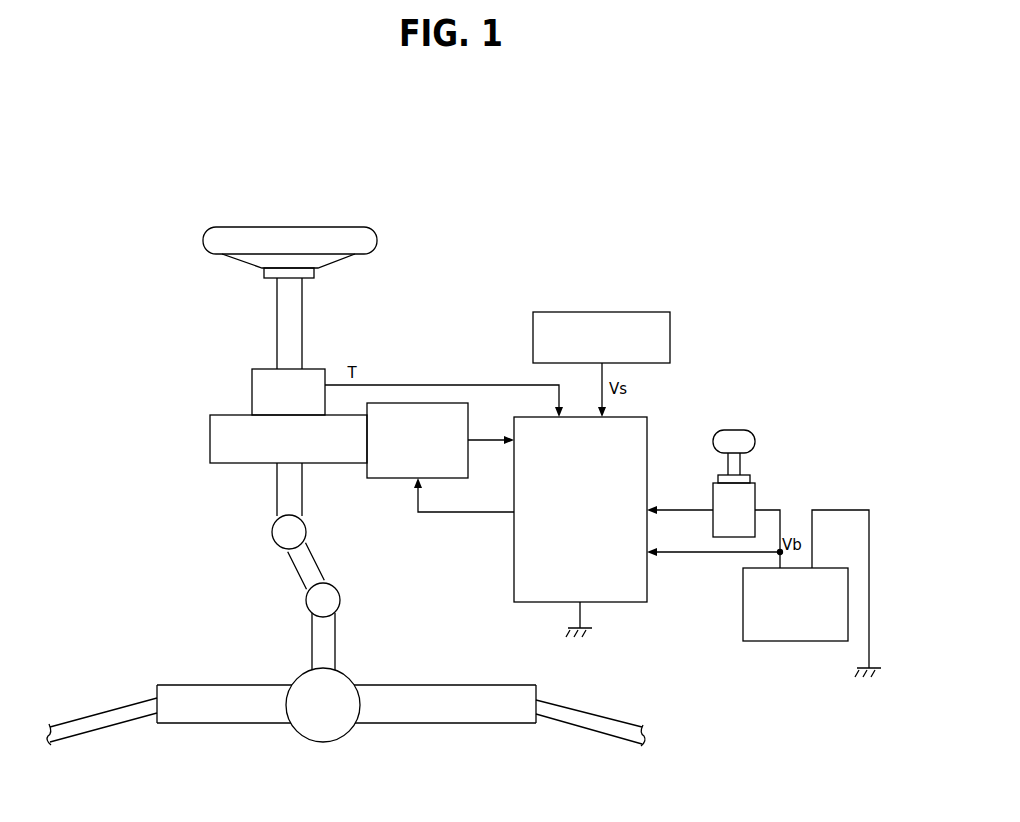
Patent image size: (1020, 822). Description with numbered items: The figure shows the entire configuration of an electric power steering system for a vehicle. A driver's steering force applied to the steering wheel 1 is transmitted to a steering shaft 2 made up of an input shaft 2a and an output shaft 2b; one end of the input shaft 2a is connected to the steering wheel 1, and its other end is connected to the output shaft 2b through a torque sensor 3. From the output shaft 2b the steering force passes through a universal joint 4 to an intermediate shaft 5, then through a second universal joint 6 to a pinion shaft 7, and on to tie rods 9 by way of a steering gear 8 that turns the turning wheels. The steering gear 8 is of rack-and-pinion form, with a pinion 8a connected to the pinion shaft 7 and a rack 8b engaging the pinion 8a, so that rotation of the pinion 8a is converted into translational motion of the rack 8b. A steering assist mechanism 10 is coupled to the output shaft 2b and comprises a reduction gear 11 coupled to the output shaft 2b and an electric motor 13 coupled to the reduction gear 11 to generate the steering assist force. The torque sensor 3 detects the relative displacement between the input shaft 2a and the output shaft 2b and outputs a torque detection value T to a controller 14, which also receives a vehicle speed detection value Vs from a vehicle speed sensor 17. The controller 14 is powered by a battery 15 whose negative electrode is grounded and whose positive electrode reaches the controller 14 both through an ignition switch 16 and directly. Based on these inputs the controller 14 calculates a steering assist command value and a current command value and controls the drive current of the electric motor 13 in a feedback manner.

The steering wheel 1 is at (300, 228).
The steering shaft 2 is at (244, 397).
The input shaft 2a is at (283, 350).
The output shaft 2b is at (278, 498).
The torque sensor 3 is at (252, 388).
The universal joint 4 is at (272, 531).
The intermediate shaft 5 is at (300, 570).
The universal joint 6 is at (306, 600).
The pinion shaft 7 is at (318, 634).
The steering gear 8 is at (346, 677).
The pinion 8a is at (302, 682).
The rack 8b is at (450, 688).
The tie rods 9 is at (108, 705).
The steering assist mechanism 10 is at (249, 416).
The reduction gear 11 is at (210, 438).
The electric motor 13 is at (468, 418).
The controller 14 is at (647, 430).
The battery 15 is at (795, 641).
The ignition switch 16 is at (755, 492).
The vehicle speed sensor 17 is at (560, 312).